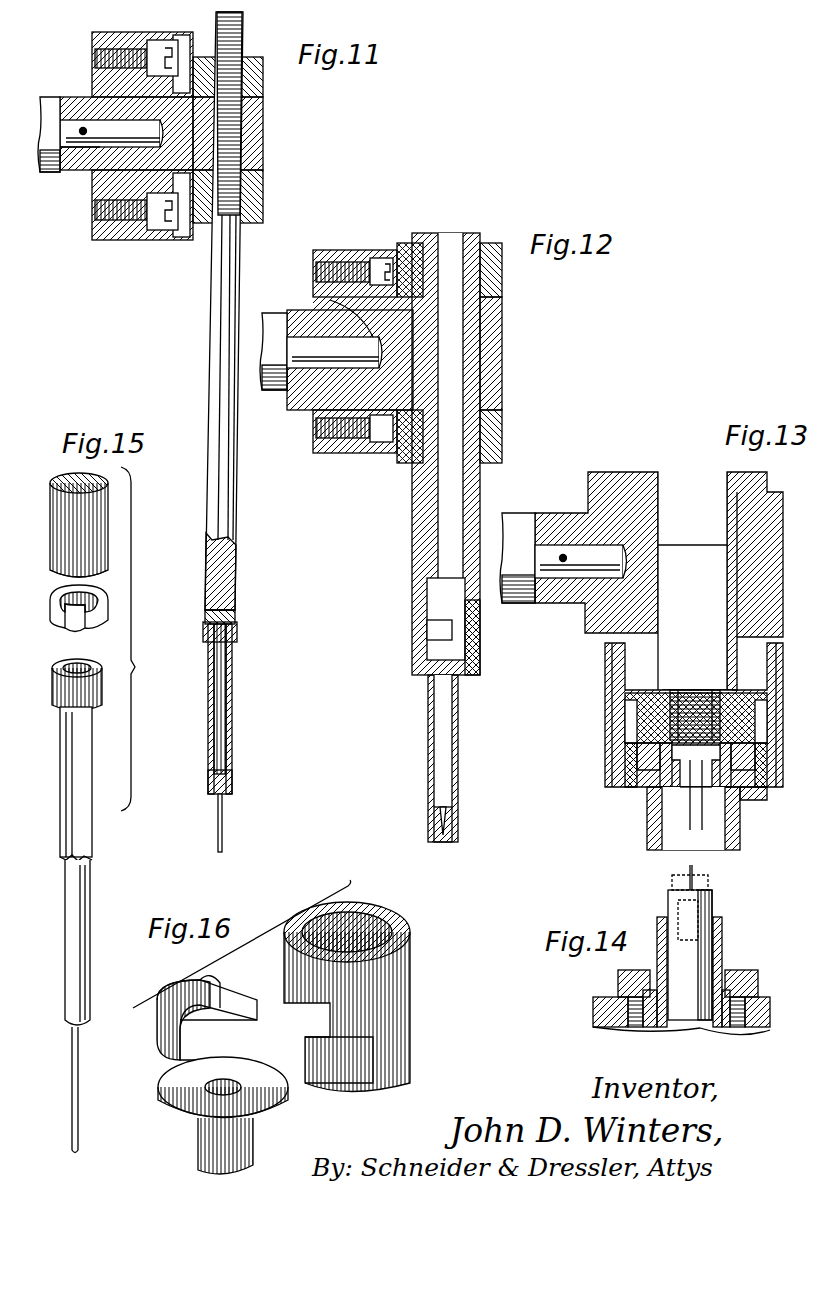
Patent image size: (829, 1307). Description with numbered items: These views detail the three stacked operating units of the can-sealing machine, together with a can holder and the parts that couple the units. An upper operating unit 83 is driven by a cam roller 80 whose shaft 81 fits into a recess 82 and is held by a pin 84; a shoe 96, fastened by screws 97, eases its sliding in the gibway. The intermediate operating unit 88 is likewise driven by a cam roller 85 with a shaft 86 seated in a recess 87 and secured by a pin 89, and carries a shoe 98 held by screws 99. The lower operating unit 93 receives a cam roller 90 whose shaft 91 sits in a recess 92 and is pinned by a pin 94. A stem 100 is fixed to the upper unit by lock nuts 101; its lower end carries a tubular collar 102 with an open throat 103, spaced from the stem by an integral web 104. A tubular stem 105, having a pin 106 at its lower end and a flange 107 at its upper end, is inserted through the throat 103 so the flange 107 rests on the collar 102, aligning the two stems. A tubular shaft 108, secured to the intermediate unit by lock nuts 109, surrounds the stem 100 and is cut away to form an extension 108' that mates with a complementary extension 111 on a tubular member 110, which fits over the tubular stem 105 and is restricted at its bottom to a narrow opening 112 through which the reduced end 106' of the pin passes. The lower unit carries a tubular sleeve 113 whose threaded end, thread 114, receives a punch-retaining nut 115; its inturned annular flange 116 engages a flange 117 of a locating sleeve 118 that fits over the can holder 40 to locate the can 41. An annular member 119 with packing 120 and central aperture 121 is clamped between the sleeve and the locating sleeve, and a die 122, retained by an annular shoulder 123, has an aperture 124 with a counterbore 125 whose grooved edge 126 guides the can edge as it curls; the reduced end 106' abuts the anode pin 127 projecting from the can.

In FIG. 14, the can holder 40 is at (722, 958).
In FIG. 14, the can 41 is at (712, 900).
In FIG. 14, the pin 127 is at (688, 882).
In FIG. 11, the cam roller 80 is at (47, 97).
In FIG. 11, the shaft 81 is at (80, 150).
In FIG. 11, the recess 82 is at (150, 126).
In FIG. 11, the upper operating unit 83 is at (263, 133).
In FIG. 11, the pin 84 is at (83, 127).
In FIG. 12, the cam roller 85 is at (274, 313).
In FIG. 12, the shaft 86 is at (334, 352).
In FIG. 12, the recess 87 is at (330, 300).
In FIG. 12, the intermediate operating unit 88 is at (502, 347).
In FIG. 12, the pin 89 is at (290, 390).
In FIG. 13, the cam roller 90 is at (516, 513).
In FIG. 13, the shaft 91 is at (548, 547).
In FIG. 13, the recess 92 is at (620, 572).
In FIG. 13, the lower operating unit 93 is at (612, 472).
In FIG. 13, the pin 94 is at (563, 562).
In FIG. 11, the shoe 96 is at (92, 36).
In FIG. 11, the screws 97 is at (138, 252).
In FIG. 12, the shoe 98 is at (330, 250).
In FIG. 12, the screws 99 is at (358, 262).
In FIG. 11, the stem 100 is at (210, 348).
In FIG. 15, the stem 100 is at (108, 525).
In FIG. 11, the lock nuts 101 is at (250, 57).
In FIG. 11, the tubular collar 102 is at (206, 640).
In FIG. 15, the tubular collar 102 is at (100, 612).
In FIG. 15, the throat 103 is at (75, 632).
In FIG. 11, the web 104 is at (236, 616).
In FIG. 15, the web 104 is at (95, 585).
In FIG. 11, the tubular stem 105 is at (232, 722).
In FIG. 15, the tubular stem 105 is at (80, 840).
In FIG. 11, the pin 106 is at (246, 699).
In FIG. 15, the pin 106 is at (56, 942).
In FIG. 11, the reduced end 106' is at (247, 823).
In FIG. 15, the reduced end 106' is at (48, 1090).
In FIG. 11, the flange 107 is at (238, 605).
In FIG. 15, the flange 107 is at (62, 665).
In FIG. 12, the tubular shaft 108 is at (420, 454).
In FIG. 16, the tubular shaft 108 is at (323, 997).
In FIG. 12, the extension 108' is at (497, 637).
In FIG. 12, the lock nuts 109 is at (502, 270).
In FIG. 16, the lock nuts 109 is at (322, 1080).
In FIG. 12, the tubular member 110 is at (428, 722).
In FIG. 16, the tubular member 110 is at (198, 1147).
In FIG. 12, the extension 111 is at (412, 637).
In FIG. 16, the extension 111 is at (240, 1040).
In FIG. 12, the opening 112 is at (436, 830).
In FIG. 13, the tubular sleeve 113 is at (767, 475).
In FIG. 13, the thread 114 is at (612, 672).
In FIG. 13, the punch-retaining nut 115 is at (625, 740).
In FIG. 13, the inturned annular flange 116 is at (625, 785).
In FIG. 13, the flange 117 is at (755, 795).
In FIG. 13, the locating sleeve 118 is at (740, 843).
In FIG. 13, the annular member 119 is at (640, 717).
In FIG. 13, the packing 120 is at (697, 685).
In FIG. 13, the aperture 121 is at (695, 690).
In FIG. 13, the die 122 is at (645, 758).
In FIG. 13, the annular shoulder 123 is at (712, 795).
In FIG. 13, the aperture 124 is at (691, 795).
In FIG. 13, the counterbore 125 is at (672, 780).
In FIG. 13, the groove 126 is at (662, 780).